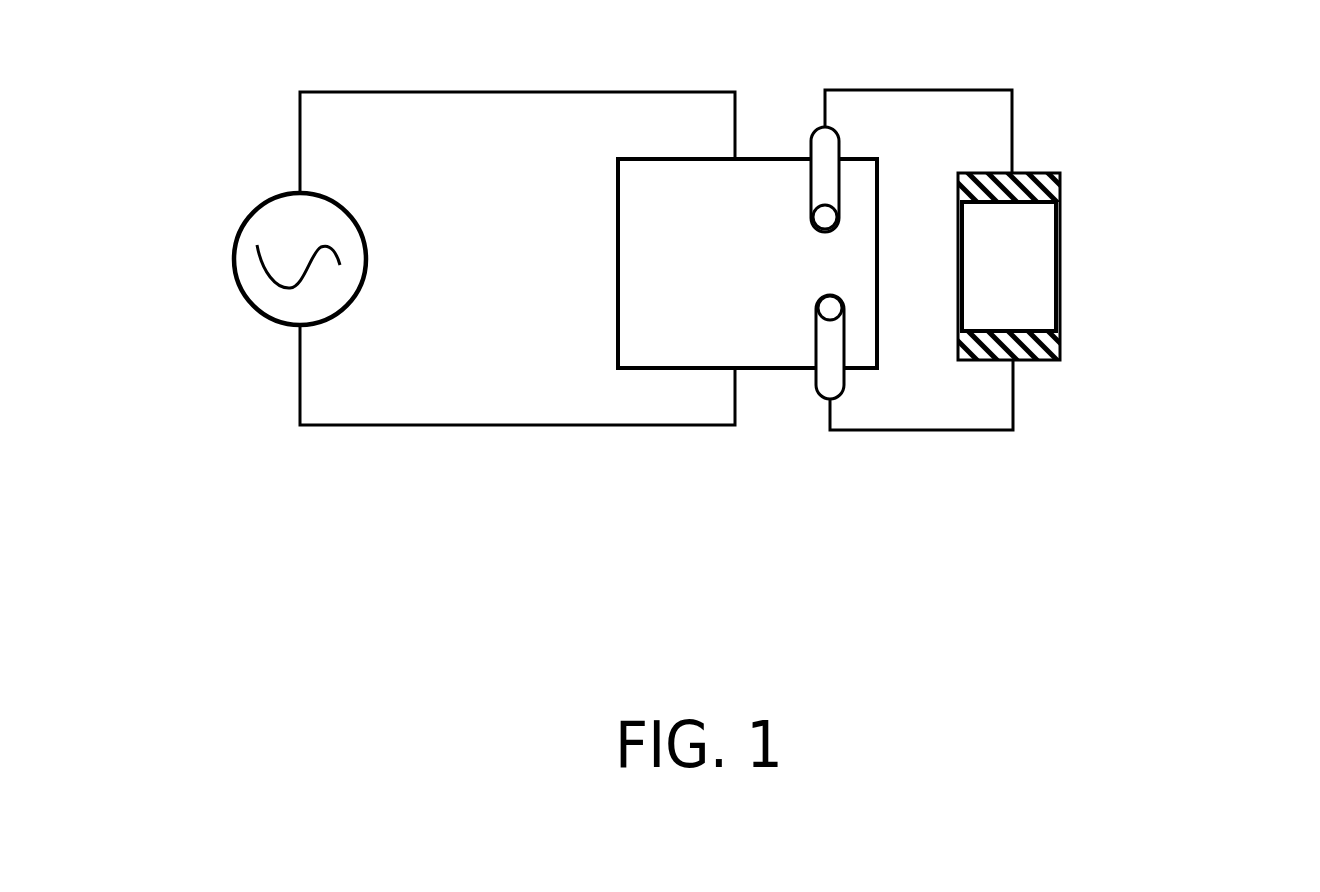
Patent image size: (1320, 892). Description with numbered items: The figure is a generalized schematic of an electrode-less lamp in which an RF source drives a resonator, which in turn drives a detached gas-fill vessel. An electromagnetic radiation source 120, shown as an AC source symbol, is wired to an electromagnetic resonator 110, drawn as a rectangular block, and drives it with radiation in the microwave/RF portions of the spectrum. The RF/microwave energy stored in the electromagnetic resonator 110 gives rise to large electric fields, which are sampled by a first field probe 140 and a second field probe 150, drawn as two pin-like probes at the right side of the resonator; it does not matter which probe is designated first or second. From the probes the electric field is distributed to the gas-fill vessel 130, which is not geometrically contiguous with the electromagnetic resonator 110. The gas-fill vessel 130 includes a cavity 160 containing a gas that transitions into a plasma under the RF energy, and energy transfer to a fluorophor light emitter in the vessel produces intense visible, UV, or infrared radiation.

The electromagnetic resonator 110 is at (708, 375).
The electromagnetic radiation source 120 is at (228, 267).
The gas-fill vessel 130 is at (1085, 347).
The first field probe 140 is at (836, 378).
The second field probe 150 is at (863, 157).
The cavity 160 is at (1037, 270).